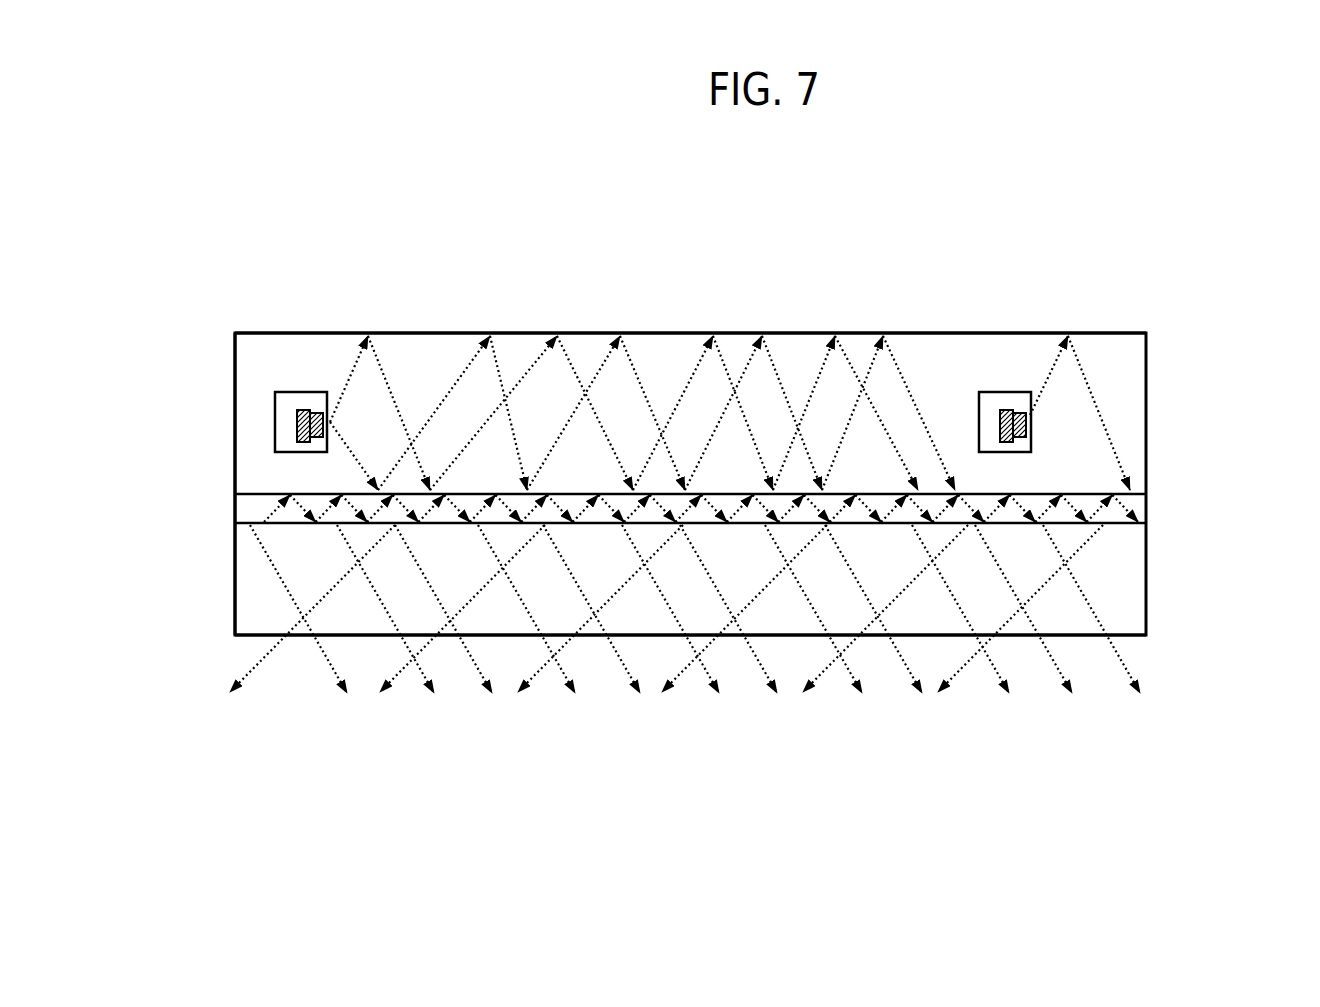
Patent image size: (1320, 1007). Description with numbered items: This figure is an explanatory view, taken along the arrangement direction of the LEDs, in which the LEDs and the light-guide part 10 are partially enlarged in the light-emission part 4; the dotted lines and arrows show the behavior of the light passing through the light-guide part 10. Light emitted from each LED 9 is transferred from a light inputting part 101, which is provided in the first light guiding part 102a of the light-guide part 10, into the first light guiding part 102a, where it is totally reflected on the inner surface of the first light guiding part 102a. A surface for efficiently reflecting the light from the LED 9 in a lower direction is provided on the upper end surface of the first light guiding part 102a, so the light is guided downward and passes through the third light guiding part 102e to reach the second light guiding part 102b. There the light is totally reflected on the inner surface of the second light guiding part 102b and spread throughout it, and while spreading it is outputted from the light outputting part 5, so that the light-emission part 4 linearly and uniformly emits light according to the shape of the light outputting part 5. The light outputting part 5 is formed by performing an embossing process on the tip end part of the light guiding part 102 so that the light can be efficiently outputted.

The light-emission part 4 is at (229, 373).
The light outputting part 5 is at (245, 638).
The LED 9 is at (312, 407).
The light-guide part 10 is at (246, 325).
The light inputting part 101 is at (287, 403).
The light guiding part 102 is at (515, 332).
The first light guiding part 102a is at (1140, 407).
The third light guiding part 102e is at (1140, 506).
The second light guiding part 102b is at (1140, 587).